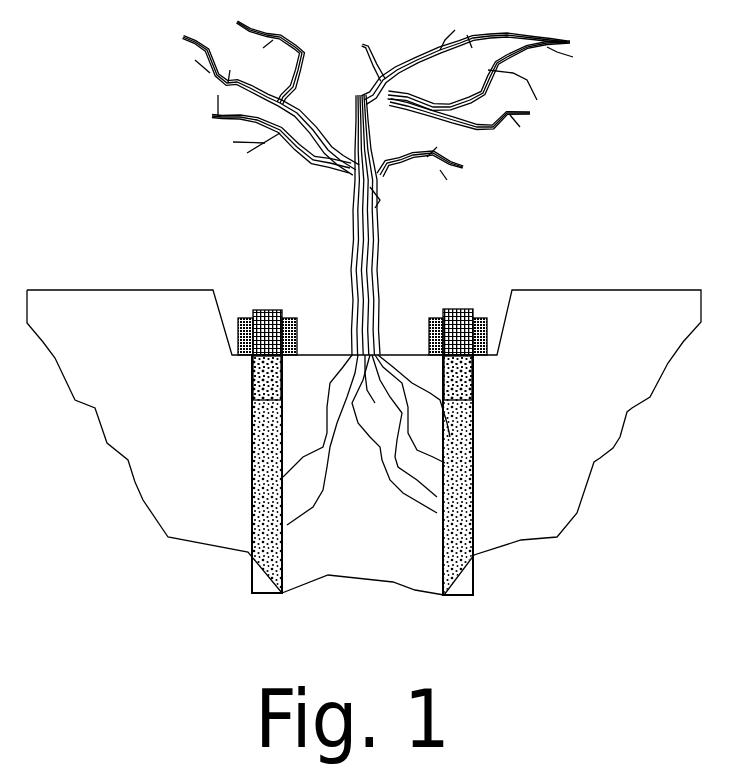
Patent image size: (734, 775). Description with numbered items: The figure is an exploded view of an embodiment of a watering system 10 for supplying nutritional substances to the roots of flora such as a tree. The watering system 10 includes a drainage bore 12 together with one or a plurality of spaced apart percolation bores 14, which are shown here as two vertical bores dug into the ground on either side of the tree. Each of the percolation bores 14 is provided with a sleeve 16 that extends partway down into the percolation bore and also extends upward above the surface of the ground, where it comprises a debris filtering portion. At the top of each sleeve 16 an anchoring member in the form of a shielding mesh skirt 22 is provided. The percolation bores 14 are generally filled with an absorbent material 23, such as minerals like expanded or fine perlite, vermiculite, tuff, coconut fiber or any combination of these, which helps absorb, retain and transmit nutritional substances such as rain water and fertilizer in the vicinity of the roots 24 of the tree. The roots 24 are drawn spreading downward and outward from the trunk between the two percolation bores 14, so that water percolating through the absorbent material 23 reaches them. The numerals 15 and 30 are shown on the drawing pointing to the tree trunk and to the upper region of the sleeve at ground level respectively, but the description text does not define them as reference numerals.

The watering system 10 is at (492, 232).
The drainage bore 12 is at (312, 352).
The percolation bores 14 is at (252, 492).
The tree trunk 15 is at (362, 255).
The sleeves 16 is at (252, 377).
The shielding mesh skirt 22 is at (432, 318).
The absorbent material 23 is at (262, 432).
The roots 24 is at (325, 475).
The ground surface level at tube 30 is at (474, 357).